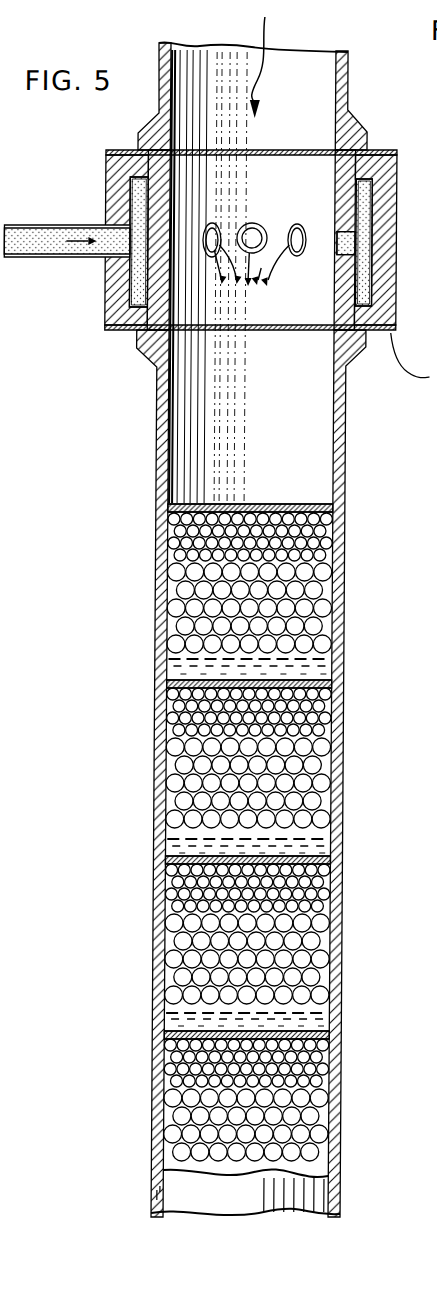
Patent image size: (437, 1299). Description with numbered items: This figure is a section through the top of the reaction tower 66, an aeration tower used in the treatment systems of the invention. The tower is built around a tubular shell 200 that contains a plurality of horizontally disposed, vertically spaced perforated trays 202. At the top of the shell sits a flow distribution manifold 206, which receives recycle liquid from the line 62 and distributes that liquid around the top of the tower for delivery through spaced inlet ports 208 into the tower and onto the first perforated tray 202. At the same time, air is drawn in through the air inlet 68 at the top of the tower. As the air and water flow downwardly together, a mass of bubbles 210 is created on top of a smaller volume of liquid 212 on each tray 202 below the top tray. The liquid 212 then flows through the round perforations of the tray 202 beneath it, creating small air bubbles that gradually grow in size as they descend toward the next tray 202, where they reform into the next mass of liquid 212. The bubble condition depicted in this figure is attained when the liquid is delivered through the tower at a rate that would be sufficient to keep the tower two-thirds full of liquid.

The line 62 is at (23, 224).
The reaction tower 66 is at (150, 460).
The air inlet 68 is at (217, 63).
The tubular shell 200 is at (160, 1124).
The perforated tray 202 is at (302, 506).
The flow distribution manifold 206 is at (378, 151).
The inlet ports 208 is at (298, 223).
The mass of bubbles 210 is at (329, 566).
The liquid 212 is at (331, 661).